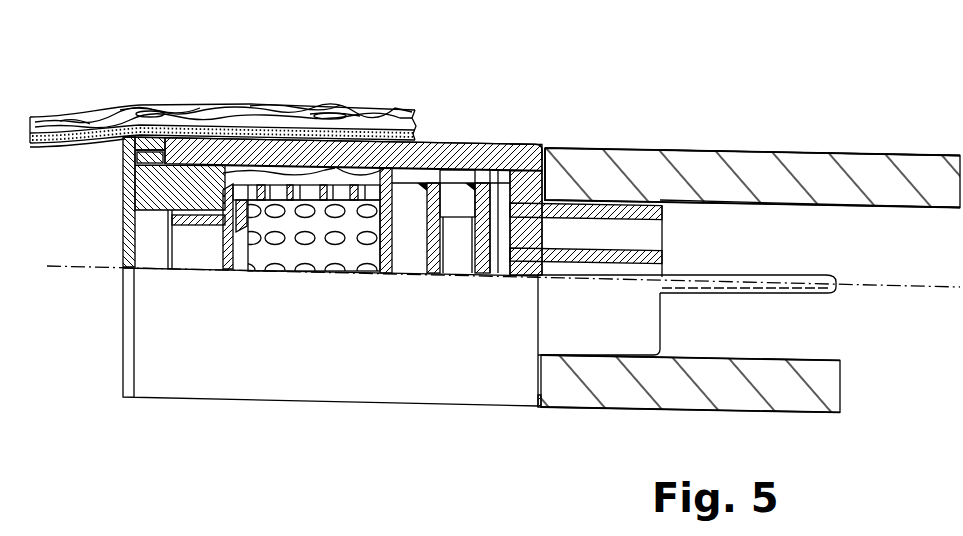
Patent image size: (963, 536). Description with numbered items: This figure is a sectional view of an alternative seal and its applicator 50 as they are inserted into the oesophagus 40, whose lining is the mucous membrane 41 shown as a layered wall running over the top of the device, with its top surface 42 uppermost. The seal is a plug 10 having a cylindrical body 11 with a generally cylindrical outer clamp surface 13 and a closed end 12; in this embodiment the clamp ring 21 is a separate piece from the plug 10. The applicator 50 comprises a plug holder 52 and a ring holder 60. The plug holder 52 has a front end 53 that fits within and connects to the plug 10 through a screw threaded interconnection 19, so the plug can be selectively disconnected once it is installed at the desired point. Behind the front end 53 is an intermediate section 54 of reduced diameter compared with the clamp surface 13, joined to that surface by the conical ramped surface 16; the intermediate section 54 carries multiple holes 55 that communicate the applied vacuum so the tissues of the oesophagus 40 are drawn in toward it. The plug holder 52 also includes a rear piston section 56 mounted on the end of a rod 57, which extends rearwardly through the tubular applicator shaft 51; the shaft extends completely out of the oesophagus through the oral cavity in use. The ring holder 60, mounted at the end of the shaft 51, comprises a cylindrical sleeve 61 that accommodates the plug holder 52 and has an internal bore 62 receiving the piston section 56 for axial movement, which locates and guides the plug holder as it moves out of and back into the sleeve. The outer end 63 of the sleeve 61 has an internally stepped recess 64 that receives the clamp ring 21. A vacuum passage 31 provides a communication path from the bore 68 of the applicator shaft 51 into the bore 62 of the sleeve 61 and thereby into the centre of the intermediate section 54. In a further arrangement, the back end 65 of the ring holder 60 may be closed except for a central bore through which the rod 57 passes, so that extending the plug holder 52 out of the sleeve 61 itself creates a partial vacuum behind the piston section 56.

The plug 10 is at (112, 236).
The cylindrical body 11 is at (150, 188).
The closed end 12 is at (123, 247).
The cylindrical outer clamp surface 13 is at (205, 132).
The conical ramped surface 16 is at (333, 143).
The screw threaded interconnection 19 is at (170, 268).
The clamp ring 21 is at (148, 150).
The vacuum passage 31 is at (642, 236).
The oesophagus 40 is at (58, 104).
The mucous membrane 41 is at (92, 141).
The top surface 42 is at (104, 106).
The applicator 50 is at (702, 128).
The tubular applicator shaft 51 is at (805, 187).
The plug holder 52 is at (218, 255).
The front end 53 is at (190, 213).
The intermediate section 54 is at (367, 252).
The holes 55 is at (335, 238).
The rear piston section 56 is at (534, 136).
The rod 57 is at (783, 283).
The ring holder 60 is at (536, 130).
The cylindrical sleeve 61 is at (480, 147).
The internal cavity or bore 62 is at (440, 192).
The outer end 63 is at (213, 130).
The internally stepped recess 64 is at (182, 140).
The back end 65 is at (600, 337).
The bore 68 is at (727, 207).